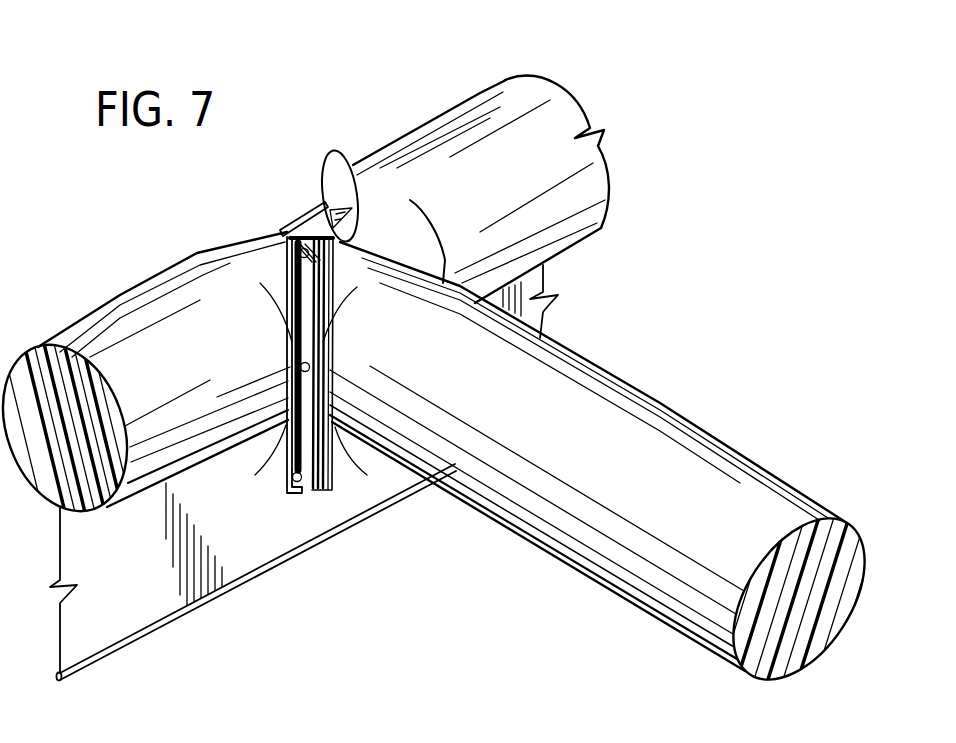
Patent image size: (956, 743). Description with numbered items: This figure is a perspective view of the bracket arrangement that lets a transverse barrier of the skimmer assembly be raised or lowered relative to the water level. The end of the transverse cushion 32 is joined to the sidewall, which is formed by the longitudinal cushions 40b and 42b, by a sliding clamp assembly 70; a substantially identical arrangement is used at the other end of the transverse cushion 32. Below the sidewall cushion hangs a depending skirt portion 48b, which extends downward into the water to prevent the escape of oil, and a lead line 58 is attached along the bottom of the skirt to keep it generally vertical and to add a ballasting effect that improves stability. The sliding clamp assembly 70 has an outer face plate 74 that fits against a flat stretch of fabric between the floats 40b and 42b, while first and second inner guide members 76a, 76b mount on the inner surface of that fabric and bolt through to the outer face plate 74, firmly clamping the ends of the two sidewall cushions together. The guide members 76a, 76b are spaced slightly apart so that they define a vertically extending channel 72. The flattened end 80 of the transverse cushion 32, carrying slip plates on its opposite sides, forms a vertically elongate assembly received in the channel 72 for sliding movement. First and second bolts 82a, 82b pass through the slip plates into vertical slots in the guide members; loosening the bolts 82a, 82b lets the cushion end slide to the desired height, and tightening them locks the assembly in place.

The transverse cushion 32 is at (620, 398).
The longitudinal cushion 40b is at (120, 318).
The longitudinal cushion 42b is at (467, 120).
The skirt portion 48b is at (257, 540).
The lead line 58 is at (194, 603).
The sliding clamp assembly 70 is at (303, 497).
The vertical channel 72 is at (328, 496).
The outer face plate 74 is at (300, 210).
The first inner guide member 76a is at (290, 471).
The second inner guide member 76b is at (338, 455).
The flattened end 80 is at (338, 149).
The first bolt 82a is at (283, 270).
The second bolt 82b is at (303, 366).